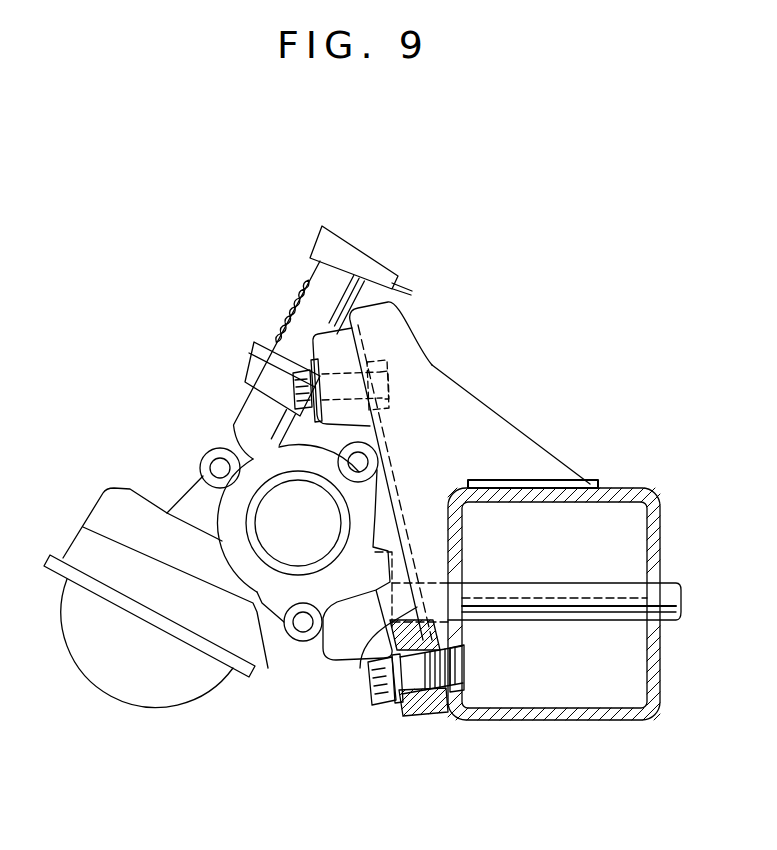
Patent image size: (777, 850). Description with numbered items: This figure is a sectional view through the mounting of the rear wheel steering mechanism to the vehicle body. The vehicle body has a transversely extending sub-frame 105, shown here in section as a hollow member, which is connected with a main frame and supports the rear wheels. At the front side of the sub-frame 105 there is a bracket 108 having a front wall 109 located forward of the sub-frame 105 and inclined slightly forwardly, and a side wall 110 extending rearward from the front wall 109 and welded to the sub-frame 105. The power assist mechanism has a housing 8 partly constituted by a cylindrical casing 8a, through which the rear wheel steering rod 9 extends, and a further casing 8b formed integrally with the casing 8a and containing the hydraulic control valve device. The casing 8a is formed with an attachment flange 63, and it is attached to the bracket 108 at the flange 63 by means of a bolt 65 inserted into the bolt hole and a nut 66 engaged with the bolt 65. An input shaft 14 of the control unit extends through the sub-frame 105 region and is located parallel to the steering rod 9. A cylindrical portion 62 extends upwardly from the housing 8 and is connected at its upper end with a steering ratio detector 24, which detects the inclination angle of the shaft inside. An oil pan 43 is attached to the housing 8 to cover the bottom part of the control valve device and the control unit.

The housing 8 is at (165, 549).
The cylindrical casing 8a is at (240, 507).
The casing 8b is at (118, 513).
The rear wheel steering rod 9 is at (281, 500).
The input shaft 14 is at (551, 588).
The steering ratio detector 24 is at (361, 263).
The oil pan 43 is at (84, 631).
The cylindrical portion 62 is at (306, 287).
The attachment flange 63 is at (427, 708).
The bolt 65 is at (256, 368).
The nut 66 is at (380, 397).
The sub-frame 105 is at (628, 490).
The bracket 108 is at (522, 418).
The front wall 109 is at (397, 655).
The side wall 110 is at (437, 371).